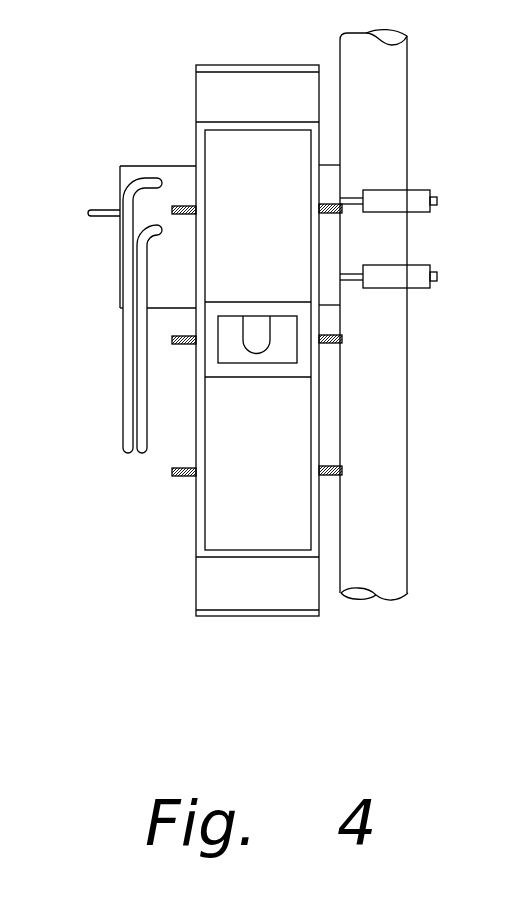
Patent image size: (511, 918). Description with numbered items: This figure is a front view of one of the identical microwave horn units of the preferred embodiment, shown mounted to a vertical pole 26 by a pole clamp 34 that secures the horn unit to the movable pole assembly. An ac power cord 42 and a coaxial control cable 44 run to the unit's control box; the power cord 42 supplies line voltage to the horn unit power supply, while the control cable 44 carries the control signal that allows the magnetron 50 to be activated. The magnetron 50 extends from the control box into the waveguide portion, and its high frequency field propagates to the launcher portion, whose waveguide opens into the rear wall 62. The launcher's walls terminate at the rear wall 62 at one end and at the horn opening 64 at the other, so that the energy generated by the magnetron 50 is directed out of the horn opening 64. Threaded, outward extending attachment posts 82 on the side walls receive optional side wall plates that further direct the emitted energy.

The pipe 26 is at (392, 114).
The pole clamp 34 is at (410, 197).
The ac power cord 42 is at (143, 340).
The coaxial control cable 44 is at (128, 377).
The magnetron 50 is at (258, 335).
The rear wall 62 is at (258, 368).
The horn opening 64 is at (238, 510).
The attachment posts 82 is at (176, 205).